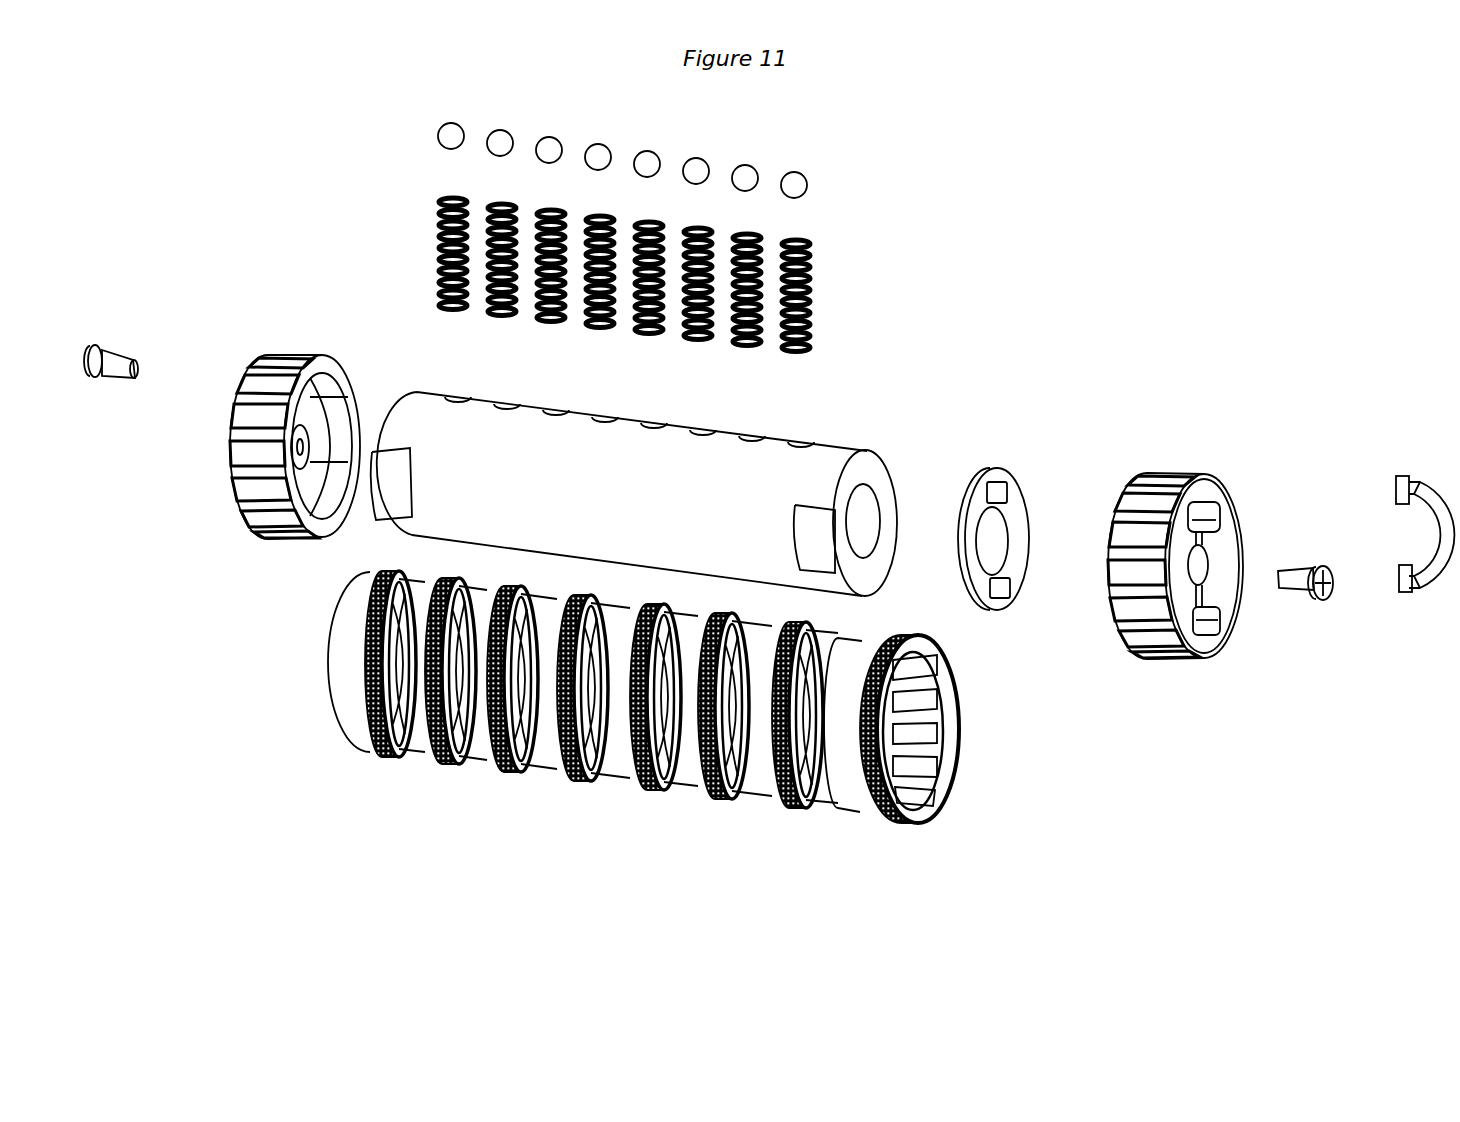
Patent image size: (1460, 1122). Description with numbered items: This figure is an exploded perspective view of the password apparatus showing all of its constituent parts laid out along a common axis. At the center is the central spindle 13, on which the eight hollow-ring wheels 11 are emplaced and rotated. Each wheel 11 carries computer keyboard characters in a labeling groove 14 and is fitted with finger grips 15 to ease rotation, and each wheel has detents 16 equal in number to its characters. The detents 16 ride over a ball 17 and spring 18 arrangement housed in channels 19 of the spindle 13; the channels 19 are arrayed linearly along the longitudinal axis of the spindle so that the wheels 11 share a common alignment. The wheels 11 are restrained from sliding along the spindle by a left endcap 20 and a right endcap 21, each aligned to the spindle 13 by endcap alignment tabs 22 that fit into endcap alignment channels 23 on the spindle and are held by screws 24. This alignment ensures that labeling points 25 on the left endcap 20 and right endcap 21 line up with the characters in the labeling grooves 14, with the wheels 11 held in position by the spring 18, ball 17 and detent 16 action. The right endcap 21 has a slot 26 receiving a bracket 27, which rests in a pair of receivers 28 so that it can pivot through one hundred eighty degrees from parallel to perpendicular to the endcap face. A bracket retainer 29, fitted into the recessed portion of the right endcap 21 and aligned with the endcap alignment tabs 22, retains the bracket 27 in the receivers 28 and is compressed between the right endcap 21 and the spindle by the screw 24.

The wheels 11 is at (481, 801).
The central spindle 13 is at (415, 406).
The labeling groove 14 is at (757, 775).
The finger grips 15 is at (888, 825).
The detents 16 is at (952, 772).
The ball 17 is at (435, 148).
The spring 18 is at (817, 277).
The channels 19 is at (808, 438).
The left endcap 20 is at (313, 535).
The right endcap 21 is at (1174, 598).
The endcap alignment tabs 22 is at (334, 428).
The endcap alignment channels 23 is at (822, 533).
The screws 24 is at (1327, 614).
The labeling points 25 is at (1141, 524).
The slot 26 is at (1210, 561).
The bracket 27 is at (1422, 593).
The receivers 28 is at (1209, 628).
The bracket retainer 29 is at (1022, 478).